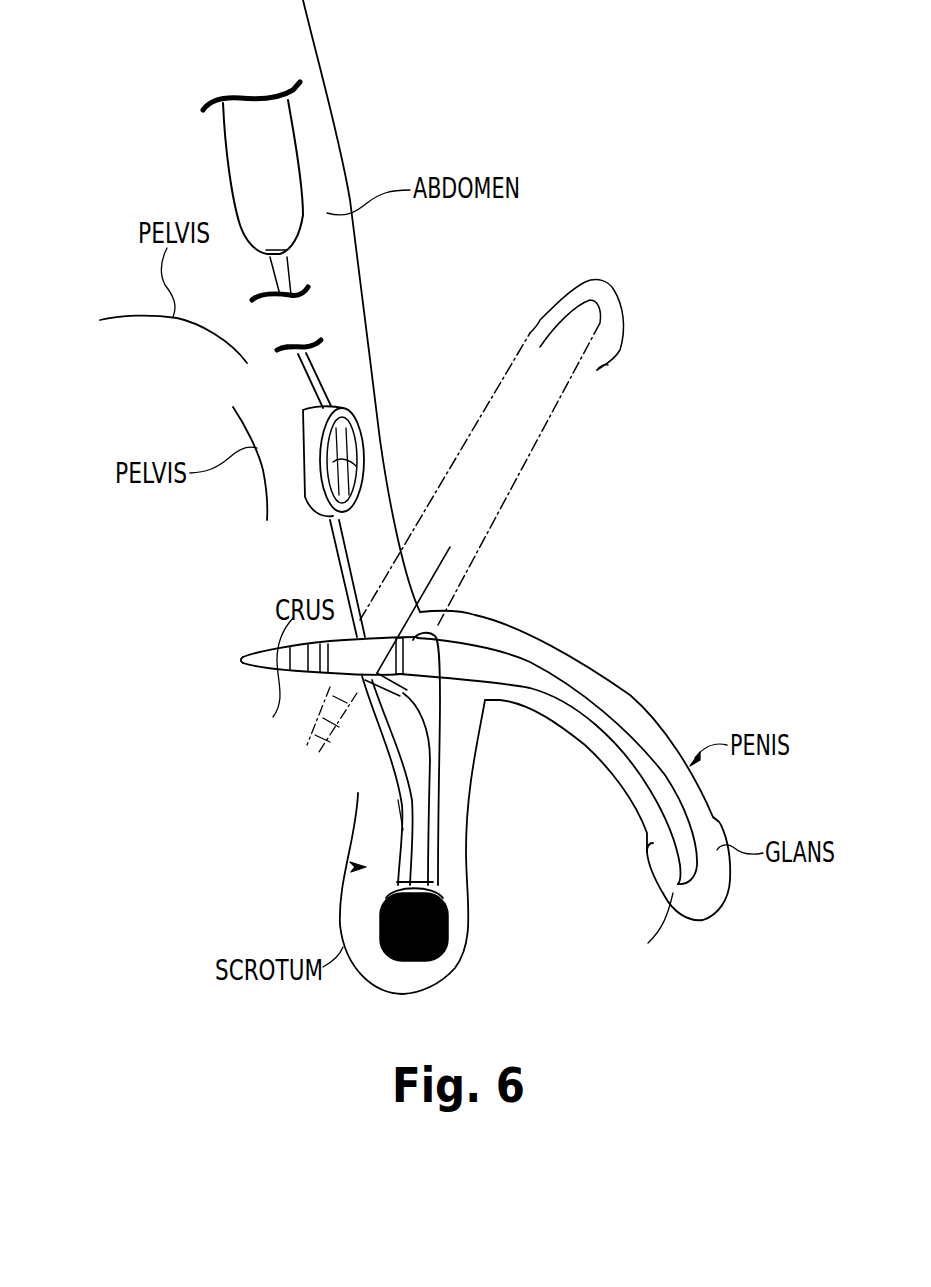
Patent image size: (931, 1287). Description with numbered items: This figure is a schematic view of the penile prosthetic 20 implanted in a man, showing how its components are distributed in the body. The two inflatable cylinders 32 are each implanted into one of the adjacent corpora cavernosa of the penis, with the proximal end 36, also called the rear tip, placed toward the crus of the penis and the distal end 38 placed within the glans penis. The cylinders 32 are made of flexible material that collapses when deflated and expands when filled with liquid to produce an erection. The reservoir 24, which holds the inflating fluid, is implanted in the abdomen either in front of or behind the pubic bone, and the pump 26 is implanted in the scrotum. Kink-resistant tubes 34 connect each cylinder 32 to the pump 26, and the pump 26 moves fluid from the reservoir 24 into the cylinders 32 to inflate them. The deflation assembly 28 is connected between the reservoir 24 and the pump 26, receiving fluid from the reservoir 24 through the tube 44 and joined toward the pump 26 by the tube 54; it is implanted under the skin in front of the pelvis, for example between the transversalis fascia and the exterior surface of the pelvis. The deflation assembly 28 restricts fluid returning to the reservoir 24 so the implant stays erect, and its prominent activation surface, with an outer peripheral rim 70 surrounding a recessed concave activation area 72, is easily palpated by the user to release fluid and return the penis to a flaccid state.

The penile prosthetic 20 is at (420, 630).
The reservoir 24 is at (285, 160).
The pump 26 is at (448, 921).
The deflation assembly 28 is at (338, 390).
The inflatable cylinders 32 is at (557, 403).
The tubes 34 is at (432, 758).
The proximal end 36 is at (247, 660).
The distal end 38 is at (597, 303).
The tube 44 is at (317, 370).
The tube 54 is at (403, 815).
The outer peripheral rim 70 is at (370, 516).
The activation area 72 is at (343, 447).